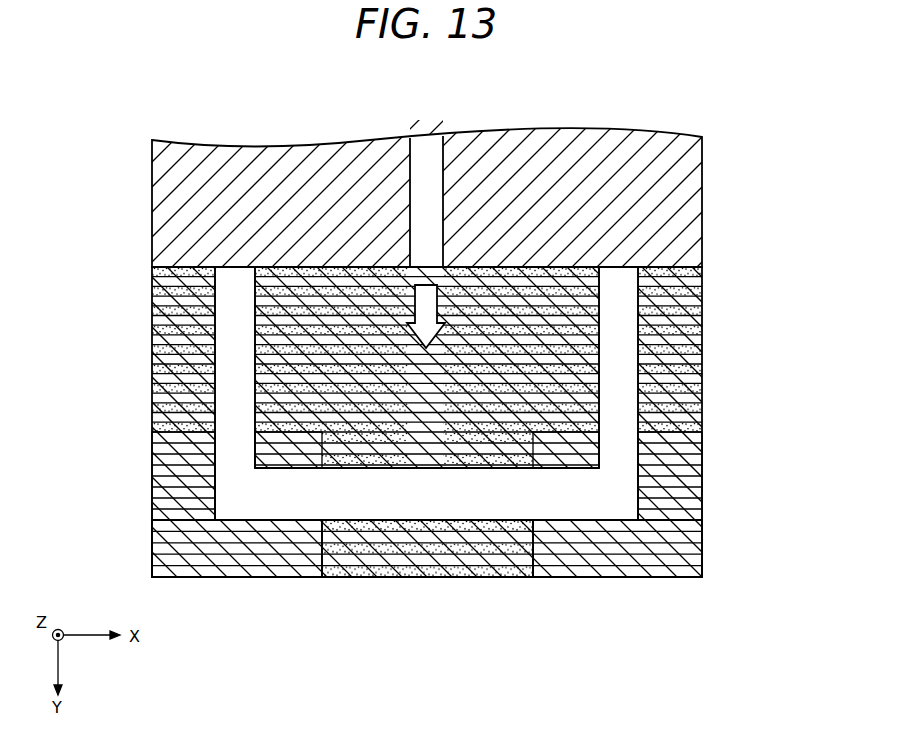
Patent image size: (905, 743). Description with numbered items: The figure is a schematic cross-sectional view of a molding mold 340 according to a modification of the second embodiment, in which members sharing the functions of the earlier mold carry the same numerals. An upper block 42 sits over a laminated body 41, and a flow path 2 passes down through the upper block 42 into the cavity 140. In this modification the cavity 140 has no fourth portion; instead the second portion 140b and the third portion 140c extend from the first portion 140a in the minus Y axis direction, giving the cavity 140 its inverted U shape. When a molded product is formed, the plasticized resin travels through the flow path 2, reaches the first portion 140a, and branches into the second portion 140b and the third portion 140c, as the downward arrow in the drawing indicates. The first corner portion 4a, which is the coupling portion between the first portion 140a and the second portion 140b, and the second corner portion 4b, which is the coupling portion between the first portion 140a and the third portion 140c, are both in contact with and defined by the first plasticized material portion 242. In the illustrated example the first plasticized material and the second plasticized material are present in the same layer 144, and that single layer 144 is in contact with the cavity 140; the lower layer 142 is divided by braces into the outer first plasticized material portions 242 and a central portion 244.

The flow path 2 is at (423, 175).
The molding mold 340 is at (755, 158).
The upper substrate 42 is at (436, 162).
The laminated structure 41 is at (452, 455).
The cavity 140 is at (430, 464).
The first portion 140a is at (480, 502).
The second portion 140b is at (238, 382).
The third portion 140c is at (620, 375).
The first corner portion 4a is at (237, 502).
The second corner portion 4b is at (612, 510).
The layer 144 is at (688, 400).
The bottom layer 142 is at (427, 586).
The first plasticized material portion 242 is at (152, 582).
The central region of bottom layer 244 is at (427, 569).